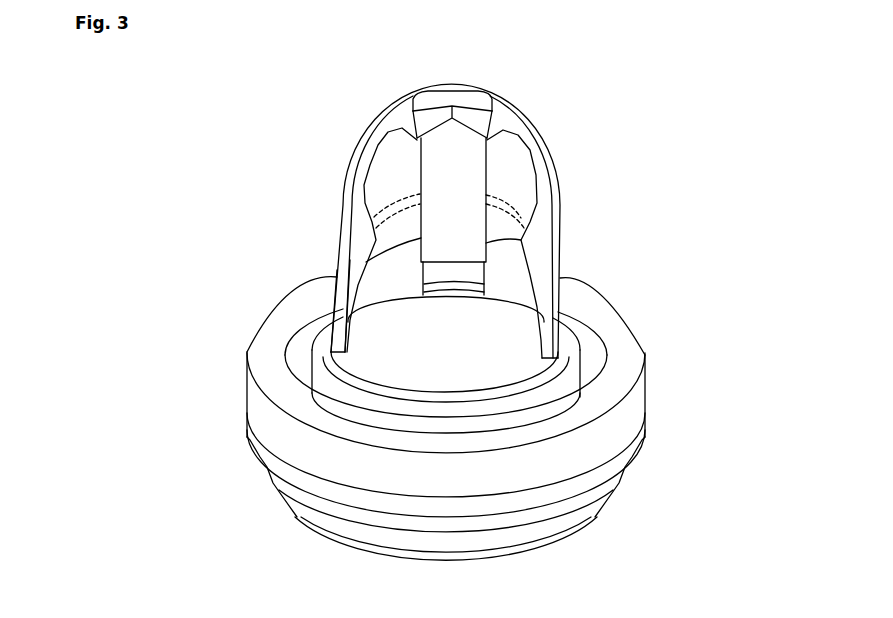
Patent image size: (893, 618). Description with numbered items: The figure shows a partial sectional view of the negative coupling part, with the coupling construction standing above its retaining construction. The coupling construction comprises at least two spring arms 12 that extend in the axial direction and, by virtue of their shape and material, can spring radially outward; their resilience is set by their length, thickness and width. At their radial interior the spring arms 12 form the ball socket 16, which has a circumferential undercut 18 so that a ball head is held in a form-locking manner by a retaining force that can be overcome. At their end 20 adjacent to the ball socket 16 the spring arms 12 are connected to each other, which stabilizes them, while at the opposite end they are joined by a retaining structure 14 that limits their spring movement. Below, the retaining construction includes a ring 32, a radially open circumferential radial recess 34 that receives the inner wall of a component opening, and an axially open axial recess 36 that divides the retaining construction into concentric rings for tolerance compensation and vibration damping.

The spring arm 12 is at (410, 183).
The retaining structure 14 is at (500, 400).
The ball socket 16 is at (383, 168).
The undercut 18 is at (356, 230).
The end 20 is at (438, 95).
The ring 32 is at (263, 411).
The radial recess 34 is at (280, 459).
The axial recess 36 is at (588, 333).